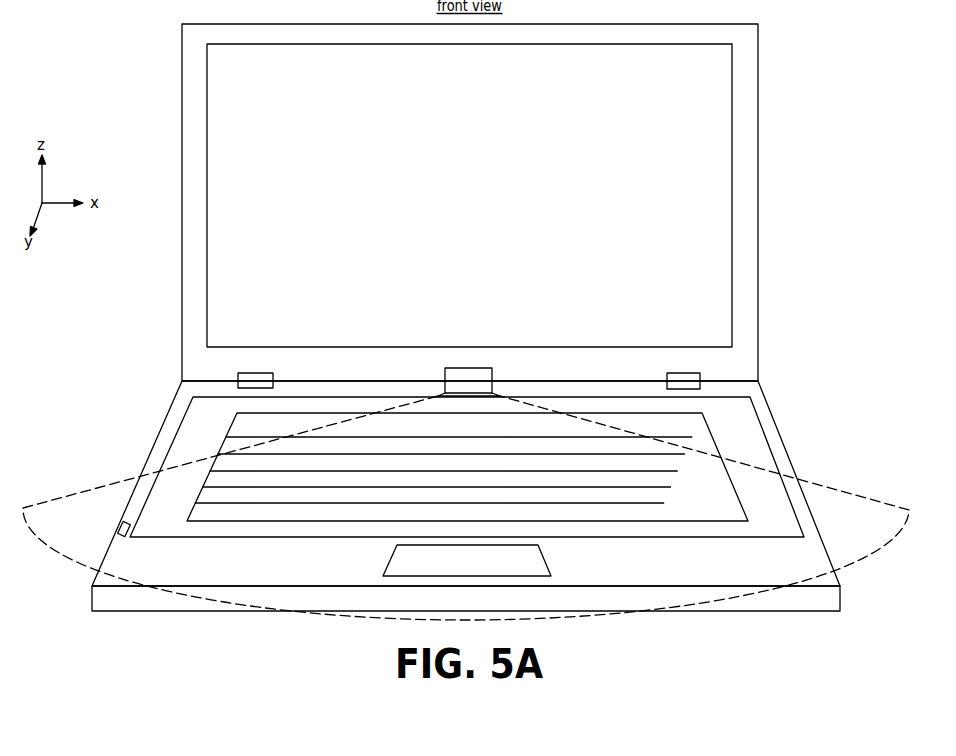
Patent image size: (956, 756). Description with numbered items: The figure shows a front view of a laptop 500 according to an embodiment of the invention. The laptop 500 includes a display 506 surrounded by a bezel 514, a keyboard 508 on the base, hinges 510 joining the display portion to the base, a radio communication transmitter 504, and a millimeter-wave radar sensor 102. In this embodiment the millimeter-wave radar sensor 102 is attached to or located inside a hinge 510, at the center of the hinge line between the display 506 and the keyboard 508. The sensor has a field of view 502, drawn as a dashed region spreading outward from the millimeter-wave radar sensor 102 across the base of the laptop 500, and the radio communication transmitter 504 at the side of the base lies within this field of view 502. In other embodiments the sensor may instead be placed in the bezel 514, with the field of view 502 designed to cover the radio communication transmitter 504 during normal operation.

The laptop 500 is at (83, 34).
The field of view 502 is at (841, 489).
The radio communication transmitter 504 is at (120, 526).
The display 506 is at (482, 204).
The keyboard 508 is at (226, 435).
The hinges 510 is at (273, 379).
The millimeter-wave radar sensor 102 is at (481, 390).
The bezel 514 is at (187, 359).